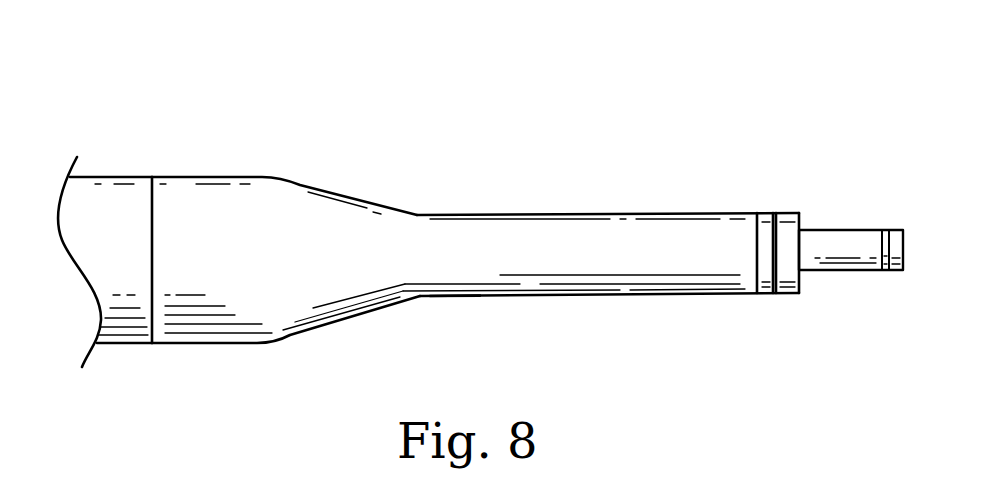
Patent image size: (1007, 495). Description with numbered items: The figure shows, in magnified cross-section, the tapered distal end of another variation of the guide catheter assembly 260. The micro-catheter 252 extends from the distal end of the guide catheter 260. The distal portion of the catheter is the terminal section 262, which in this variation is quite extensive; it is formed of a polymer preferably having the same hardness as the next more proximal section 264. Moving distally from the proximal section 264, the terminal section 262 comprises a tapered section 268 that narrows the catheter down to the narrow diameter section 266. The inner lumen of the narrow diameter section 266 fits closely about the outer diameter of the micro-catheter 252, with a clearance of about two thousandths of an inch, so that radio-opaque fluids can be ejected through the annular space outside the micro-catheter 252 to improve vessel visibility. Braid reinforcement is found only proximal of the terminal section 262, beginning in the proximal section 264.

The guide catheter assembly variation 260 is at (707, 98).
The next more proximal section 264 is at (103, 176).
The tapered section 268 is at (415, 163).
The narrow diameter section 266 is at (795, 162).
The terminal section 262 is at (443, 297).
The micro-catheter 252 is at (840, 230).